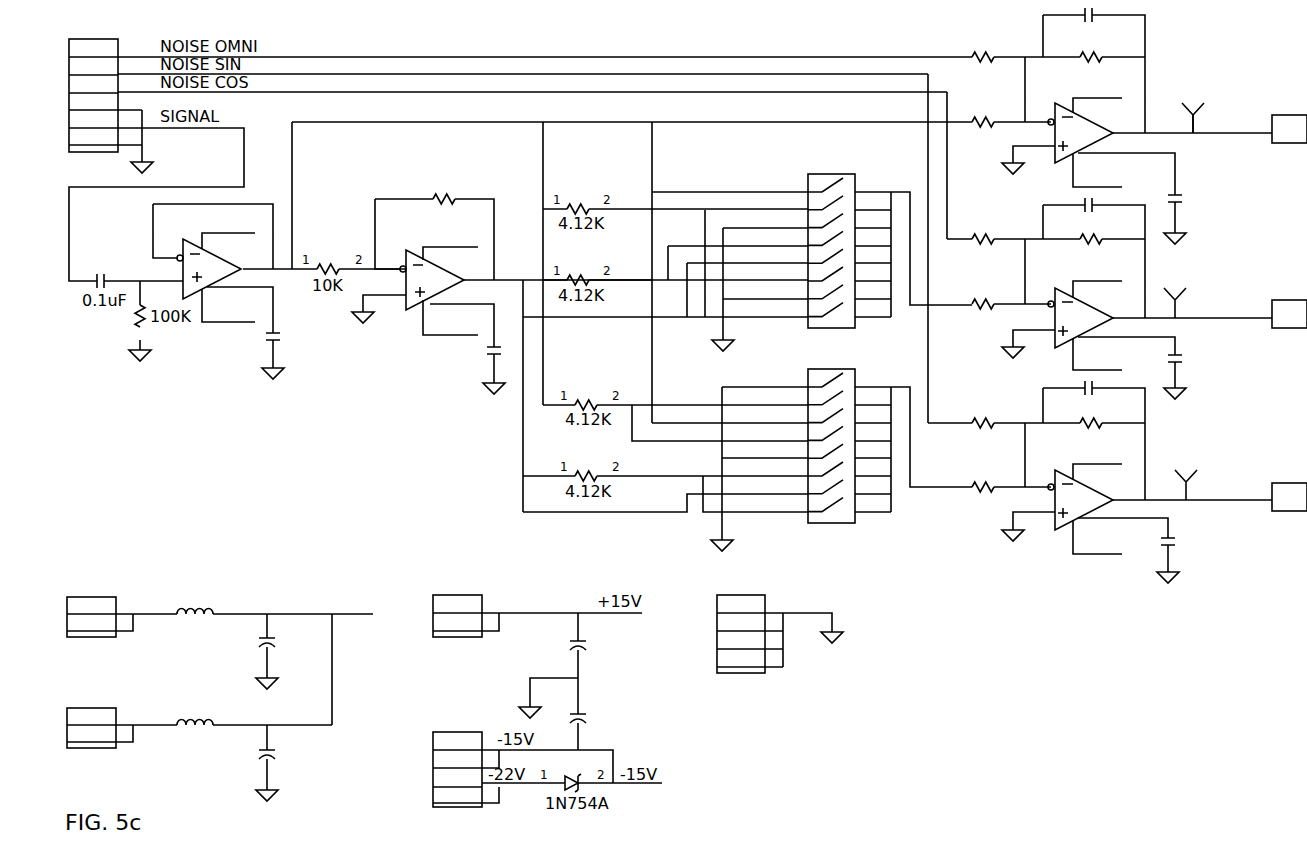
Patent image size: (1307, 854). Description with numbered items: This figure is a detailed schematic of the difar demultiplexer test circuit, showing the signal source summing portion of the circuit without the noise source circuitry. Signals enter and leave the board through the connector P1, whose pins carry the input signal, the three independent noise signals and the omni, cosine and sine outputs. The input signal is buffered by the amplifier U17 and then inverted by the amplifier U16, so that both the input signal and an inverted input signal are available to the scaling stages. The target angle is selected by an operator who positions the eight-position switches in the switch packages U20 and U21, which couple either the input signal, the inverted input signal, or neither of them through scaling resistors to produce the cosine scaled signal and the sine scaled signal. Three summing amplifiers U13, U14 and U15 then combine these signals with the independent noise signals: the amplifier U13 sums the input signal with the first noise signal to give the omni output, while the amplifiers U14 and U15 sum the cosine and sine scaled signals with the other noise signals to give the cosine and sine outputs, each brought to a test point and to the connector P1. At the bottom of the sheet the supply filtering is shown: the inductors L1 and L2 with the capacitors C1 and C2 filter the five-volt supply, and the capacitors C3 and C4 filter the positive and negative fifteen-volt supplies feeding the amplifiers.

The connector P1 is at (455, 413).
The input operational amplifier U17 is at (222, 291).
The inverting operational amplifier U16 is at (428, 288).
The DIP switch SW2 U20 is at (852, 251).
The DIP switch SW3 U21 is at (852, 446).
The OMNI summing amplifier U13 is at (1134, 126).
The COSINE summing amplifier U14 is at (1127, 298).
The SINE summing amplifier U15 is at (1117, 482).
The inductor 1.0uH L1 is at (246, 607).
The inductor 1.0uH L2 is at (224, 719).
The capacitor 22uF C1 is at (291, 669).
The capacitor 22uF C2 is at (286, 763).
The capacitor 6.8uF C3 is at (581, 665).
The capacitor 6.8uF C4 is at (602, 714).